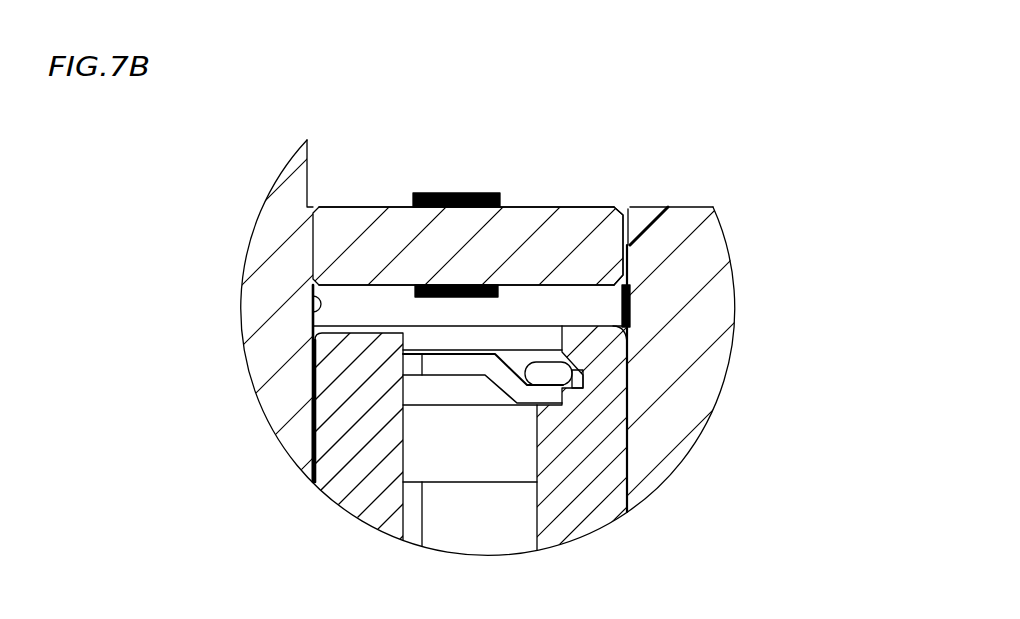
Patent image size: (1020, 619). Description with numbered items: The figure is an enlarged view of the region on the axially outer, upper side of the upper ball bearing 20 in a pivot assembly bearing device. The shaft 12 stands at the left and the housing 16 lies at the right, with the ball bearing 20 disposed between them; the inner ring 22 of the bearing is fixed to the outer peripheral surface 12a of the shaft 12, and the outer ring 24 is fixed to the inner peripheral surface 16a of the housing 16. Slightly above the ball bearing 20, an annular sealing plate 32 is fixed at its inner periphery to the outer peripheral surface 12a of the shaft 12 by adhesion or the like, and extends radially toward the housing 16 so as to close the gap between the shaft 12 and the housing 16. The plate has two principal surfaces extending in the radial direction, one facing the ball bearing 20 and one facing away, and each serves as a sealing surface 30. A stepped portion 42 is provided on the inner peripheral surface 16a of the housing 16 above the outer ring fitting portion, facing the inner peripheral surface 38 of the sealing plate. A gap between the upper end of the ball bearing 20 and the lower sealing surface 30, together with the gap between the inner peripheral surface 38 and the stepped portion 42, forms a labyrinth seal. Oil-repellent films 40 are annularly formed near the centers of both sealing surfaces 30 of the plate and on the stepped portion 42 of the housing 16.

The shaft 12 is at (268, 338).
The outer peripheral surface 12a is at (313, 292).
The housing 16 is at (675, 450).
The inner peripheral surface 16a is at (612, 393).
The ball bearing 20 is at (303, 432).
The inner ring 22 is at (343, 540).
The outer ring 24 is at (582, 513).
The sealing surface 30 is at (612, 110).
The annular sealing plate 32 is at (340, 230).
The inner peripheral surface 38 is at (648, 220).
The oil-repellent film 40 is at (783, 317).
The stepped portion 42 is at (625, 265).